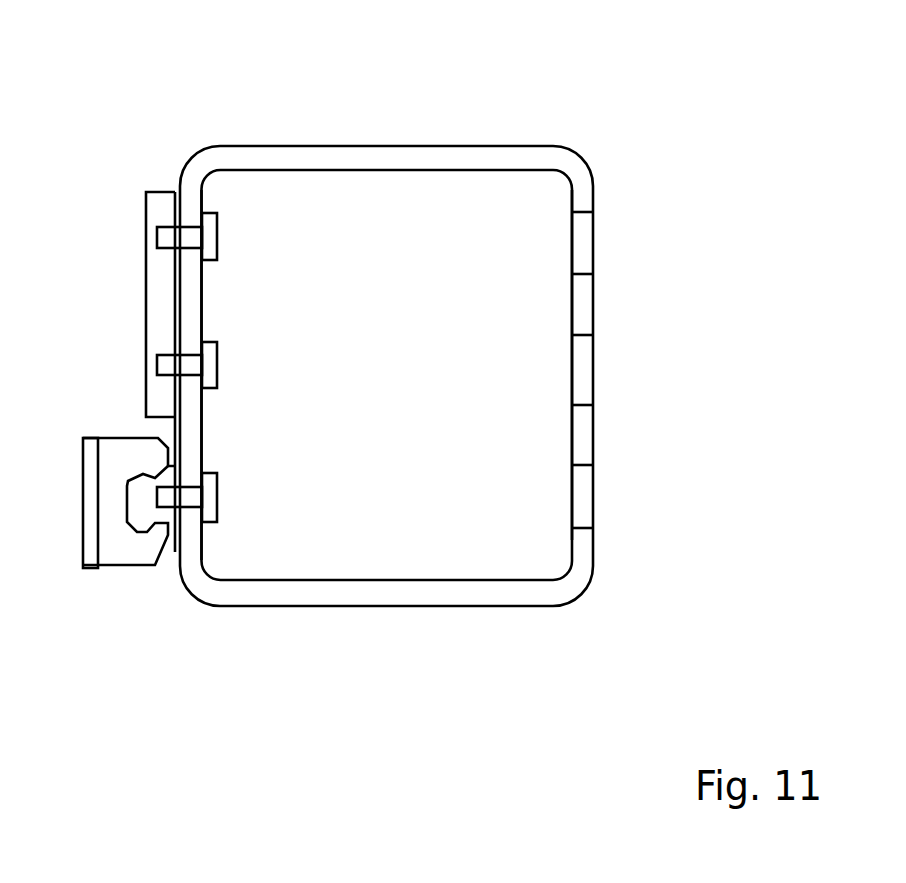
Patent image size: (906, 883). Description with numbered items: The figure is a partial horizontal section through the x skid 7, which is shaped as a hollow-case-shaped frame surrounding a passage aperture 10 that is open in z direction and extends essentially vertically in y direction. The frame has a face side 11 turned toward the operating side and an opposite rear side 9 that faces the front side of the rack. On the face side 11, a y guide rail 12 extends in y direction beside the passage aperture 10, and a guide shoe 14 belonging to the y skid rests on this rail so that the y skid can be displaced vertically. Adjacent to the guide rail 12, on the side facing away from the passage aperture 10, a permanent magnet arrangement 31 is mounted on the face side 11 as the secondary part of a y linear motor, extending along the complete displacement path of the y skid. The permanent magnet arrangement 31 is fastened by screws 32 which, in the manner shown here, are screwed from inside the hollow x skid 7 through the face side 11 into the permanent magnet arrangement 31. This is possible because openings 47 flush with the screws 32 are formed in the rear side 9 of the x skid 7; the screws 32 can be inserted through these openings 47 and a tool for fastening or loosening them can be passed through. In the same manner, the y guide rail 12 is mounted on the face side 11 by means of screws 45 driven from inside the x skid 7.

The x skid 7 is at (365, 147).
The rear side 9 is at (594, 315).
The passage aperture 10 is at (435, 738).
The face side 11 is at (203, 312).
The y guide rail 12 is at (170, 518).
The guide shoe 14 is at (132, 450).
The permanent magnet arrangement 31 is at (167, 212).
The screw 32 is at (218, 227).
The screw 45 is at (218, 502).
The opening 47 is at (594, 243).